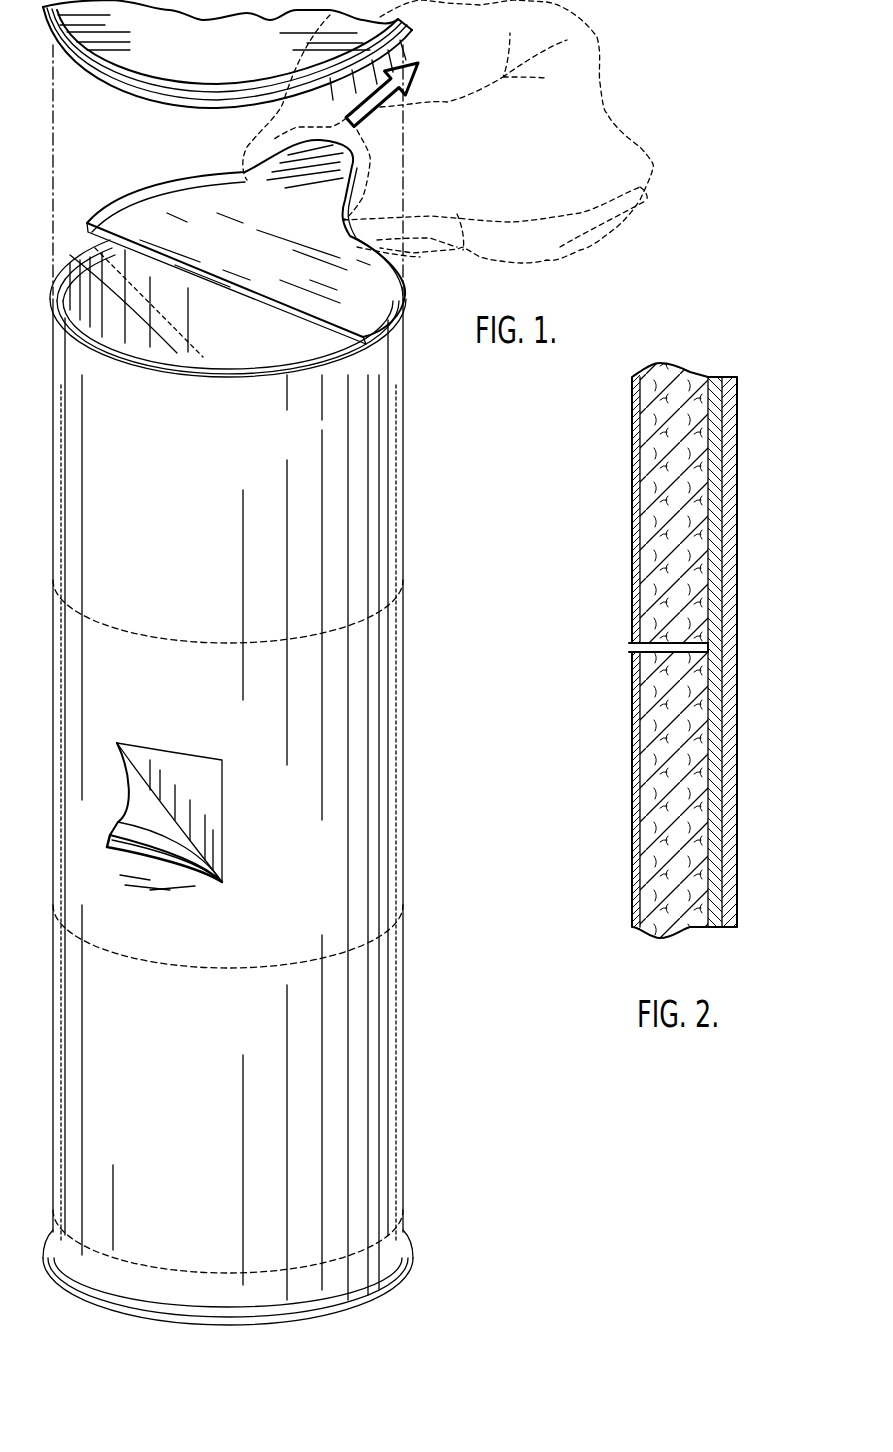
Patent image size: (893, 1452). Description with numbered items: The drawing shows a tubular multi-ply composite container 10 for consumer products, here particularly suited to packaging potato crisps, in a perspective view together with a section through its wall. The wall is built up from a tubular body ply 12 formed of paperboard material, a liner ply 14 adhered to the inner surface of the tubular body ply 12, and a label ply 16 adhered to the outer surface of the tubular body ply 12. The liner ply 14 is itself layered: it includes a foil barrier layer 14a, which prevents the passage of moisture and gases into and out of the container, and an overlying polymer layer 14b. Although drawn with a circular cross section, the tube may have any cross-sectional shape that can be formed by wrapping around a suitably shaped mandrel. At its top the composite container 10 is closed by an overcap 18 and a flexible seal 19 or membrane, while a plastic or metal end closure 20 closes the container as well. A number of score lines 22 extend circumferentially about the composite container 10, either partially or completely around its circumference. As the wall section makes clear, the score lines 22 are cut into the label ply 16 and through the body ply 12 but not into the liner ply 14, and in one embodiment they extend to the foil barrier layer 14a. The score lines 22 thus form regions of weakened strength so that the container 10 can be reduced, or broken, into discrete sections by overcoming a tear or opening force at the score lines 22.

In FIG. 1, the multi-ply composite container 10 is at (121, 191).
In FIG. 2, the multi-ply composite container 10 is at (601, 626).
In FIG. 1, the tubular body ply 12 is at (168, 857).
In FIG. 2, the tubular body ply 12 is at (657, 517).
In FIG. 1, the liner ply 14 is at (162, 820).
In FIG. 2, the liner ply 14 is at (707, 603).
In FIG. 2, the foil barrier layer 14a is at (708, 532).
In FIG. 2, the overlying polymer layer 14b is at (735, 553).
In FIG. 1, the label ply 16 is at (133, 857).
In FIG. 2, the label ply 16 is at (632, 560).
In FIG. 1, the overcap 18 is at (193, 54).
In FIG. 1, the flexible seal 19 is at (197, 182).
In FIG. 1, the end closure 20 is at (212, 1317).
In FIG. 1, the score lines 22 is at (173, 637).
In FIG. 2, the score lines 22 is at (657, 647).